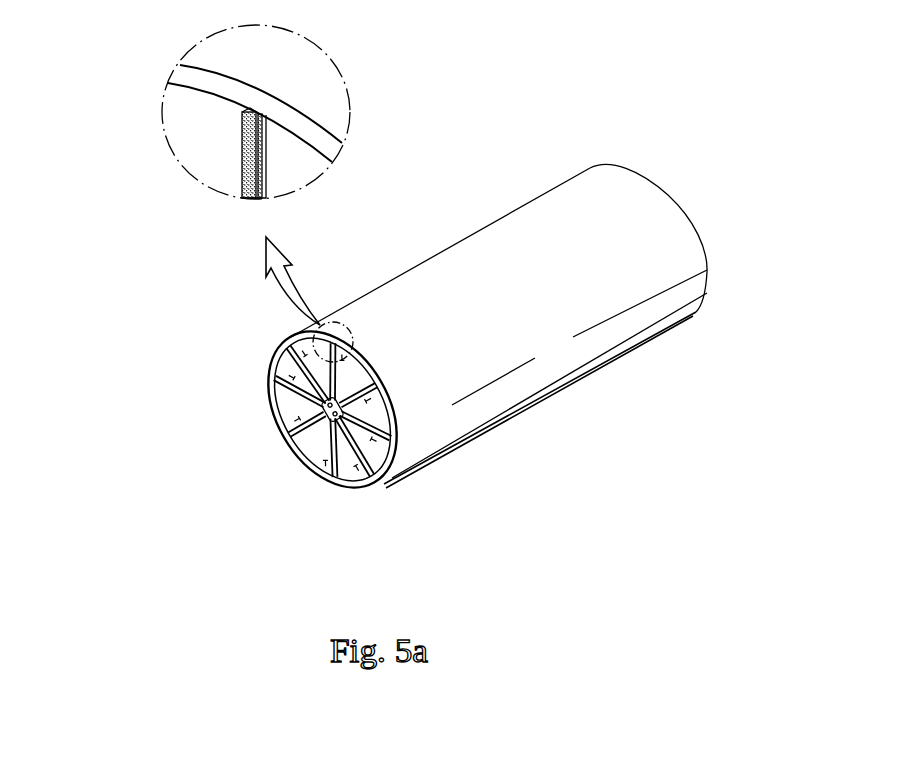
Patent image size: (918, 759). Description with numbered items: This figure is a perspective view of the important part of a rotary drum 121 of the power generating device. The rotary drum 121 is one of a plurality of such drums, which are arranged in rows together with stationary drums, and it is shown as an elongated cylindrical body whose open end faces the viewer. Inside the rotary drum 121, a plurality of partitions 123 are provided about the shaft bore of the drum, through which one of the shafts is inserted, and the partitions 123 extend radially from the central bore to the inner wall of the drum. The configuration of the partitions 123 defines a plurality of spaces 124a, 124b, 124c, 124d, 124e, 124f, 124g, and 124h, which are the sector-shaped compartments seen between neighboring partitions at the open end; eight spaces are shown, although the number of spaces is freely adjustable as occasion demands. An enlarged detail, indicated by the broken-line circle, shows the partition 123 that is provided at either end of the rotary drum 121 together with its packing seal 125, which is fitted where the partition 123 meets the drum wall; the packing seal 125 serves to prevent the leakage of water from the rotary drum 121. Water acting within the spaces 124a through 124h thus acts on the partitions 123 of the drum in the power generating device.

The rotary drum 121 is at (560, 213).
The partition 123 is at (368, 352).
The space 124a is at (288, 335).
The space 124b is at (272, 358).
The space 124c is at (292, 405).
The space 124d is at (302, 450).
The space 124e is at (358, 480).
The space 124f is at (398, 473).
The space 124g is at (397, 398).
The space 124h is at (373, 362).
The packing seal 125 is at (242, 152).